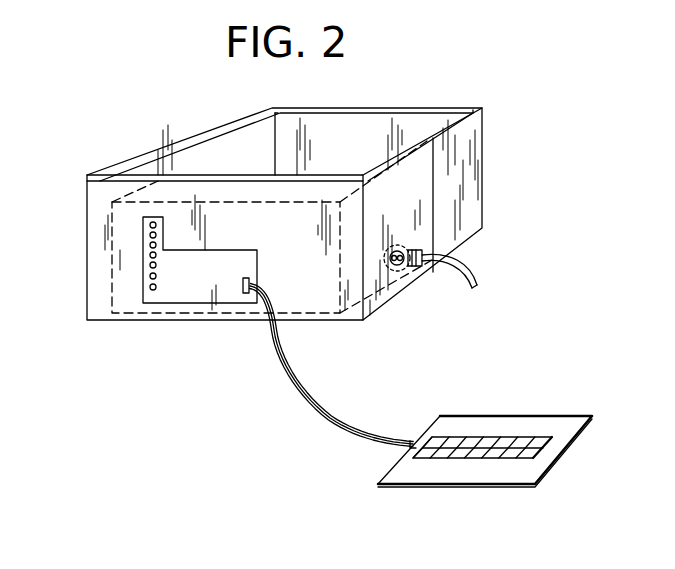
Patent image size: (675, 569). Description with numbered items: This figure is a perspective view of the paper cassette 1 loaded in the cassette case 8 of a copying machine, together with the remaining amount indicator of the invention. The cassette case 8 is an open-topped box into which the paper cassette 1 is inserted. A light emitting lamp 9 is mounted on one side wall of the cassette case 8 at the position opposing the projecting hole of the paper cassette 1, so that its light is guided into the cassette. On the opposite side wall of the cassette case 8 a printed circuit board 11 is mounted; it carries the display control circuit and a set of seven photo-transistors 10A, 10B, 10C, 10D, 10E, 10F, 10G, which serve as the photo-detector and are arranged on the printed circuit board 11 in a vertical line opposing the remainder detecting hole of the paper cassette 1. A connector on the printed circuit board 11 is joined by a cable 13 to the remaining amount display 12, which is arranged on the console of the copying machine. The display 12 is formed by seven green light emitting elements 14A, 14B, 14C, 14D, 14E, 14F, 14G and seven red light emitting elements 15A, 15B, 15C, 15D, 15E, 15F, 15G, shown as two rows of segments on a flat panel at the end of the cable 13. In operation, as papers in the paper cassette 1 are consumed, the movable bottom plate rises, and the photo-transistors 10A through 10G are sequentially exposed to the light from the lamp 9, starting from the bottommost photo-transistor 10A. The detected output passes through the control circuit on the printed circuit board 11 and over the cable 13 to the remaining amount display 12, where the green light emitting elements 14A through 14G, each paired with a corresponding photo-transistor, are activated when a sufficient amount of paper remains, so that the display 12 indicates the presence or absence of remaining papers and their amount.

The paper cassette 1 is at (475, 127).
The cassette case 8 is at (427, 183).
The light emitting lamp 9 is at (410, 250).
The photo-transistor 10A is at (159, 300).
The photo-transistor 10B is at (150, 278).
The photo-transistor 10C is at (150, 265).
The photo-transistor 10D is at (150, 255).
The photo-transistor 10E is at (150, 245).
The photo-transistor 10F is at (150, 235).
The photo-transistor 10G is at (150, 225).
The printed circuit board 11 is at (213, 290).
The remaining amount display 12 is at (412, 453).
The cable 13 is at (320, 403).
The green light emitting element 14A is at (437, 433).
The green light emitting element 14B is at (454, 437).
The green light emitting element 14C is at (471, 437).
The green light emitting element 14D is at (491, 437).
The green light emitting element 14E is at (512, 437).
The green light emitting element 14F is at (530, 440).
The green light emitting element 14G is at (562, 442).
The red light emitting element 15A is at (430, 461).
The red light emitting element 15B is at (440, 461).
The red light emitting element 15C is at (460, 461).
The red light emitting element 15D is at (477, 461).
The red light emitting element 15E is at (493, 461).
The red light emitting element 15F is at (513, 461).
The red light emitting element 15G is at (540, 460).